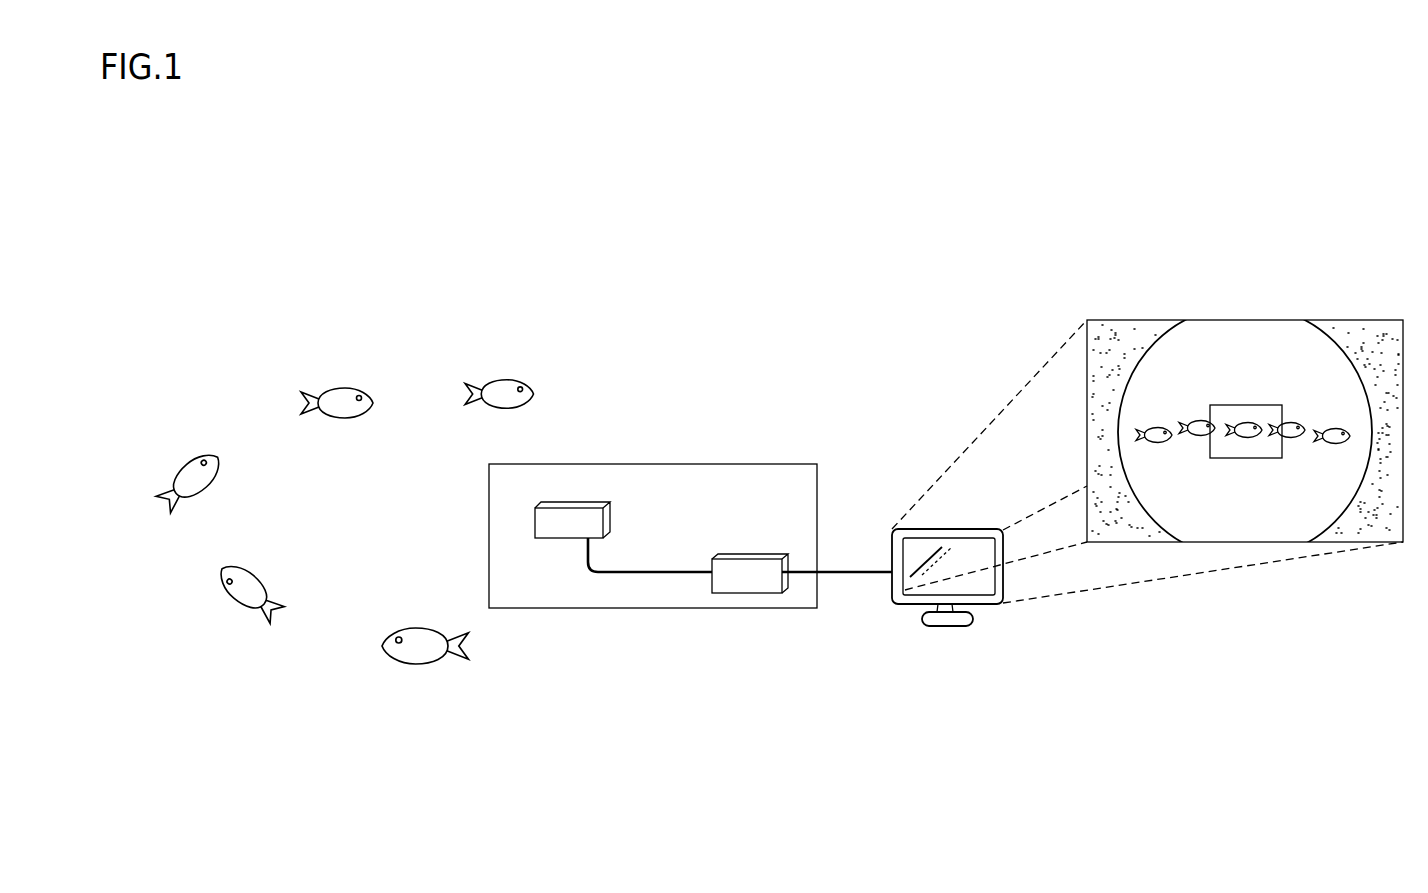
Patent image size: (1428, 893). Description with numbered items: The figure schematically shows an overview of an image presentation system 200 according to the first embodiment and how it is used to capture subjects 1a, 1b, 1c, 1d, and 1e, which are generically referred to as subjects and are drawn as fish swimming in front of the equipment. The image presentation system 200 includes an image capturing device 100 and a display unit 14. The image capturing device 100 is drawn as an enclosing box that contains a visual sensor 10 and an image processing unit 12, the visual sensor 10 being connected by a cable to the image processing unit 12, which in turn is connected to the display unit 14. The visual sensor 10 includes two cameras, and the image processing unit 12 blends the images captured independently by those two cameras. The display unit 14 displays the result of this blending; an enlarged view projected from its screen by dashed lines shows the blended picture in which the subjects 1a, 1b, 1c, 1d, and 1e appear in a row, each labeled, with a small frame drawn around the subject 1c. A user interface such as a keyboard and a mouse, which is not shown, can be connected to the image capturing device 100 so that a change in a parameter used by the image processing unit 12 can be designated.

The subject 1a is at (418, 664).
The subject 1b is at (236, 608).
The subject 1c is at (190, 458).
The subject 1d is at (343, 388).
The subject 1e is at (500, 380).
The visual sensor 10 is at (611, 512).
The image processing unit 12 is at (757, 553).
The display unit 14 is at (975, 528).
The image capturing device 100 is at (802, 464).
The image presentation system 200 is at (602, 732).